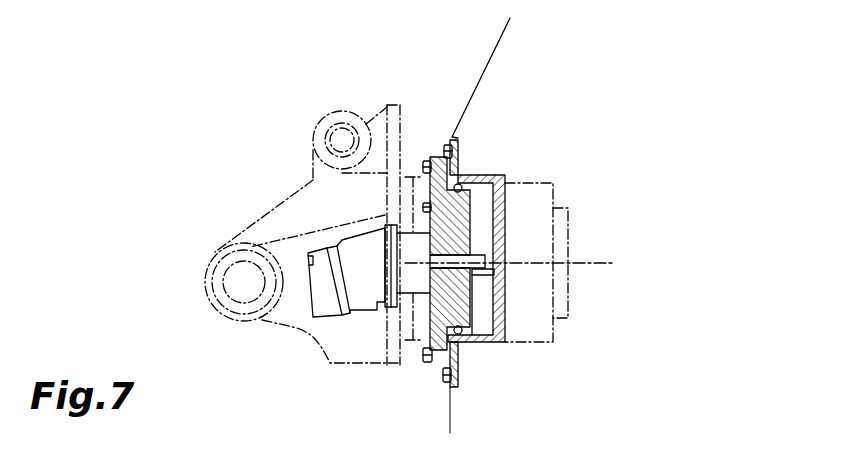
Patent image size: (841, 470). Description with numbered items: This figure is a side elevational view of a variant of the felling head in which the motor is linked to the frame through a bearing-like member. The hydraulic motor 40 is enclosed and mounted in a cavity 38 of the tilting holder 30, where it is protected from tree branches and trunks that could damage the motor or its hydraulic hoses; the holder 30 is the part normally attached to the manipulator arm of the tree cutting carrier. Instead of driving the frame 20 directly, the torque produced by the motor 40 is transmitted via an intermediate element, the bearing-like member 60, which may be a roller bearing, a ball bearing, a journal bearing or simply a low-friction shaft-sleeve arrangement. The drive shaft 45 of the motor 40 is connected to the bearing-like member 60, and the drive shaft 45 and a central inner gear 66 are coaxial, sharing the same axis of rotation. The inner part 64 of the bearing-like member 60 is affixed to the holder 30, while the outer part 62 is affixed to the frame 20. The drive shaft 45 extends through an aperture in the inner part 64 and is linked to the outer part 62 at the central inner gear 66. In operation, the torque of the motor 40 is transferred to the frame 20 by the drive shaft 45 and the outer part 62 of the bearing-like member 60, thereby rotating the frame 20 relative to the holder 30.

The frame 20 is at (492, 52).
The tilting holder 30 is at (240, 235).
The cavity 38 is at (310, 339).
The hydraulic motor 40 is at (373, 285).
The drive shaft 45 is at (476, 272).
The bearing-like member 60 is at (438, 136).
The outer part 62 is at (472, 343).
The inner part 64 is at (432, 365).
The central inner gear 66 is at (505, 305).